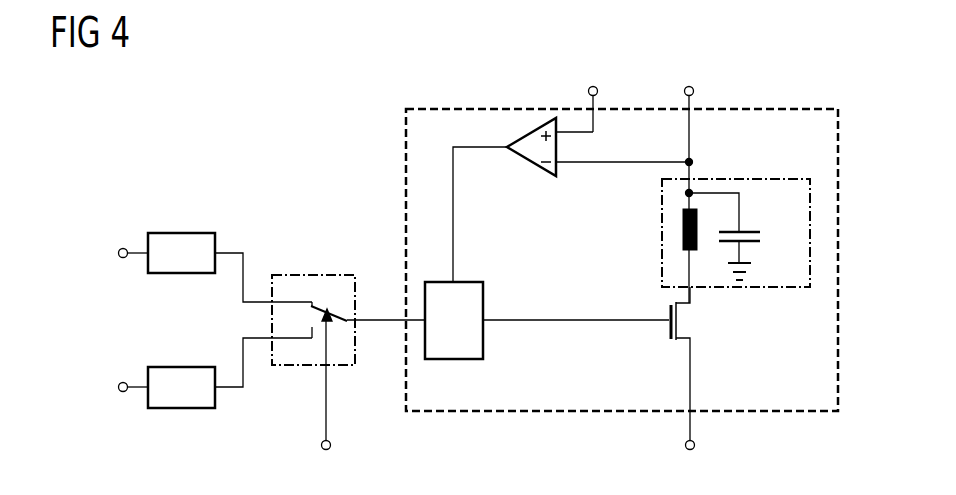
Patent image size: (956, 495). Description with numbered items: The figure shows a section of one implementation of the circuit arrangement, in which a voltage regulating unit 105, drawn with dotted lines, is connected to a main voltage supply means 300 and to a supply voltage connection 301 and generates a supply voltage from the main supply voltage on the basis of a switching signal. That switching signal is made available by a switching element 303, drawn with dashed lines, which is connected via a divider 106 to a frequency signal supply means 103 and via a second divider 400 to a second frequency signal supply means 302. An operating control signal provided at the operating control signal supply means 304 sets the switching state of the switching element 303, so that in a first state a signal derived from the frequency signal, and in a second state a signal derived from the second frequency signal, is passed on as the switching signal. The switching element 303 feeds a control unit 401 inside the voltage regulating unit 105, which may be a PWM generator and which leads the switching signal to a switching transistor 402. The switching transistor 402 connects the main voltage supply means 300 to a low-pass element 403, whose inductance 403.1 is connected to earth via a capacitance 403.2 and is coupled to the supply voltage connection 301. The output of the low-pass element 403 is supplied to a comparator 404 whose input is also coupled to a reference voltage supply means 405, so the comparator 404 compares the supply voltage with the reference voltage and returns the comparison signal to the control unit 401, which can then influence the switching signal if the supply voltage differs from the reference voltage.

The frequency signal supply means 103 is at (118, 252).
The divider 106 is at (180, 232).
The second frequency signal supply means 302 is at (118, 386).
The second divider 400 is at (180, 365).
The switching element 303 is at (320, 274).
The operating control signal supply means 304 is at (320, 444).
The control unit 401 is at (483, 339).
The comparator 404 is at (531, 163).
The reference voltage supply means 405 is at (592, 85).
The supply voltage connection 301 is at (689, 84).
The voltage regulating unit 105 is at (758, 108).
The low-pass element 403 is at (742, 176).
The inductance 403.1 is at (682, 228).
The capacitance 403.2 is at (772, 215).
The switching transistor 402 is at (680, 322).
The main voltage supply means 300 is at (697, 445).